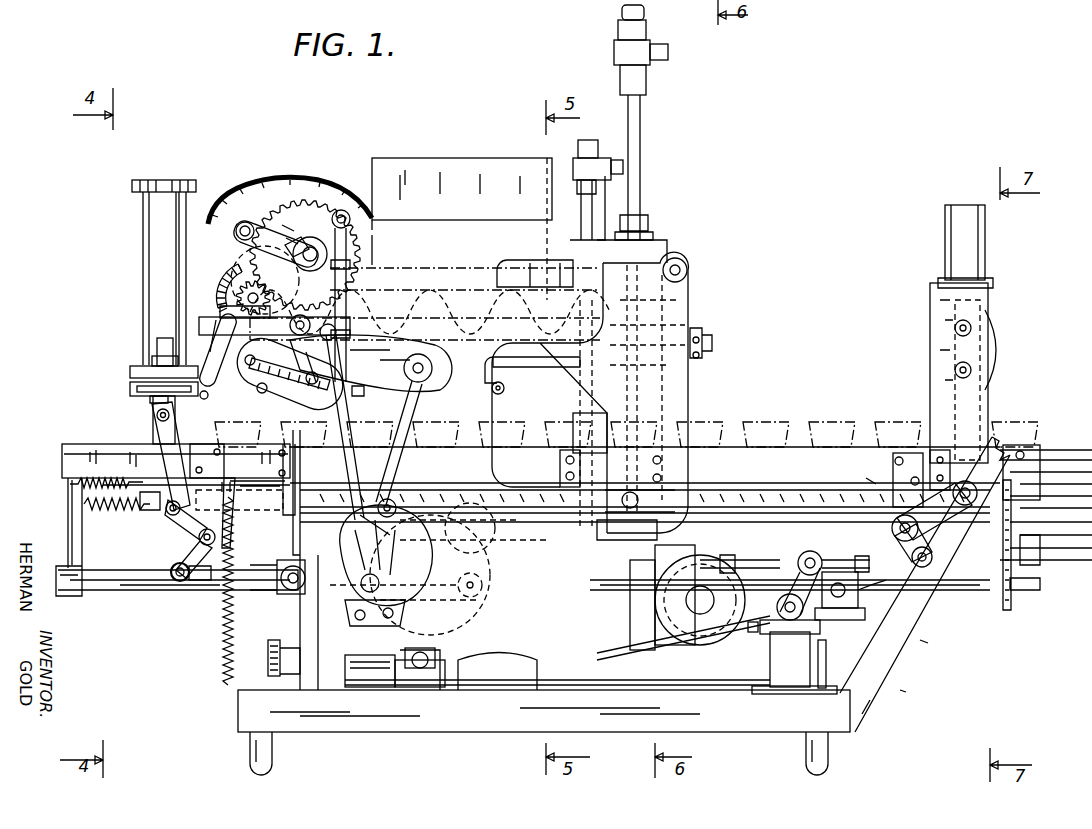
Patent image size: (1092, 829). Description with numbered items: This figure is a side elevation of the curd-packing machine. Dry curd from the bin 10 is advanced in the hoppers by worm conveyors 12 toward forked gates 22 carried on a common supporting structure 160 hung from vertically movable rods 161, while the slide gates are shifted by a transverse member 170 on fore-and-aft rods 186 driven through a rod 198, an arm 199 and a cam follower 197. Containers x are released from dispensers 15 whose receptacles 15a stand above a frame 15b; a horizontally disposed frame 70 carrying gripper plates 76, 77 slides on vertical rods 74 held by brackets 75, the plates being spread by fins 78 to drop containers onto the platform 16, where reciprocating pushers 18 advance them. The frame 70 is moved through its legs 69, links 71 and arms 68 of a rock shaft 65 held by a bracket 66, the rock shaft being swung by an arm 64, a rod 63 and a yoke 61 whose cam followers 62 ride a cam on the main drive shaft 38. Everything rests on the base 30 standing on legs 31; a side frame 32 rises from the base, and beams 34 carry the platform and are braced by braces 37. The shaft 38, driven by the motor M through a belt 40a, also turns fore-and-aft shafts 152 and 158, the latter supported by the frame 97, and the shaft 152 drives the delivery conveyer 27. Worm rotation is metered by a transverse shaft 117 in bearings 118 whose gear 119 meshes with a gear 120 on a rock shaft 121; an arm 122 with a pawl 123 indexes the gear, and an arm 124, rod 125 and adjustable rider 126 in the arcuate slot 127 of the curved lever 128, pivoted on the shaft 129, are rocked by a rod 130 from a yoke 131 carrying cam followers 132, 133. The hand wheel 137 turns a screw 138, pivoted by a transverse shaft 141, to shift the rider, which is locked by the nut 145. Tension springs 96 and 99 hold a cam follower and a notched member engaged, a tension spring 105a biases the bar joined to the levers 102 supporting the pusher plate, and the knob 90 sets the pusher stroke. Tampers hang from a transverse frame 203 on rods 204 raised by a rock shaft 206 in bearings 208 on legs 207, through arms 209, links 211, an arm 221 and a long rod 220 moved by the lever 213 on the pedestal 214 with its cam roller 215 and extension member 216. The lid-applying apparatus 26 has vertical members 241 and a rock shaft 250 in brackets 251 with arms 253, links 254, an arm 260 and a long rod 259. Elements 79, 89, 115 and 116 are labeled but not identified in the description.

The bin 10 is at (416, 165).
The worm conveyor 12 is at (422, 267).
The dispensers 15 is at (124, 342).
The receptacles 15a is at (143, 278).
The horizontally disposed frame 15b is at (136, 370).
The platform 16 is at (62, 443).
The reciprocating pushers 18 is at (740, 423).
The forked gate 22 is at (620, 175).
The lid-applying apparatus 26 is at (999, 276).
The moving conveyer 27 is at (1052, 450).
The base 30 is at (436, 732).
The legs 31 is at (272, 750).
The side frame 32 is at (298, 610).
The horizontally disposed beams 34 is at (60, 462).
The braces 37 is at (928, 628).
The main drive shaft 38 is at (340, 616).
The belt 40a is at (660, 650).
The slotted member or yoke 61 is at (276, 598).
The cam followers 62 is at (280, 568).
The rod 63 is at (198, 578).
The arm 64 is at (190, 552).
The rock shaft 65 is at (199, 538).
The bracket 66 is at (222, 476).
The arms 68 is at (178, 520).
The legs 69 is at (195, 408).
The horizontally disposed frame 70 is at (148, 386).
The links 71 is at (148, 450).
The vertical rods 74 is at (162, 338).
The brackets 75 is at (140, 462).
The gripper plate 76 is at (140, 372).
The gripper plate 77 is at (188, 384).
The cams or fins 78 is at (145, 420).
The pin 79 is at (184, 420).
The bracket 89 is at (226, 504).
The knob 90 is at (260, 670).
The tension spring 96 is at (70, 486).
The frame 97 is at (77, 508).
The tension spring 99 is at (230, 628).
The levers 102 is at (167, 508).
The tension spring 105a is at (96, 504).
The gear 115 is at (265, 280).
The gear support 116 is at (235, 274).
The transverse shaft 117 is at (243, 272).
The bearings 118 is at (224, 298).
The gear 119 is at (228, 294).
The gear 120 is at (303, 188).
The rock shaft 121 is at (313, 238).
The arm 122 is at (270, 240).
The pawl 123 is at (249, 222).
The arm 124 is at (341, 212).
The rod 125 is at (343, 278).
The adjustable rider 126 is at (360, 412).
The arcuate slot 127 is at (418, 404).
The curved lever 128 is at (452, 352).
The shaft 129 is at (252, 398).
The rod 130 is at (402, 470).
The yoke 131 is at (395, 502).
The cam follower 132 is at (418, 510).
The cam follower 133 is at (350, 640).
The hand wheel 137 is at (190, 325).
The screw 138 is at (300, 400).
The transverse shaft 141 is at (283, 374).
The locking nut 145 is at (306, 396).
The fore-and-aft shaft 152 is at (880, 592).
The fore-and-aft shaft 158 is at (135, 592).
The horizontal supporting structure 160 is at (576, 158).
The vertically movable rods 161 is at (580, 216).
The transverse member 170 is at (702, 347).
The fore-and-aft rods 186 is at (545, 372).
The cam follower 197 is at (388, 630).
The rod 198 is at (346, 466).
The arm 199 is at (313, 307).
The transverse frame 203 is at (664, 64).
The vertically movable rods 204 is at (642, 134).
The rock shaft 206 is at (790, 620).
The legs 207 is at (826, 665).
The bearings 208 is at (825, 618).
The arms 209 is at (778, 547).
The links 211 is at (690, 482).
The lever 213 is at (435, 608).
The pedestal 214 is at (420, 700).
The cam roller 215 is at (433, 566).
The extension member 216 is at (430, 540).
The long rod 220 is at (740, 560).
The arm 221 is at (824, 560).
The vertically disposed members 241 is at (930, 338).
The transverse rock shaft 250 is at (920, 532).
The brackets 251 is at (906, 458).
The arms 253 is at (950, 528).
The links 254 is at (978, 411).
The long rod 259 is at (848, 576).
The arm 260 is at (934, 556).
The electrical motor M is at (705, 655).
The containers x is at (818, 428).